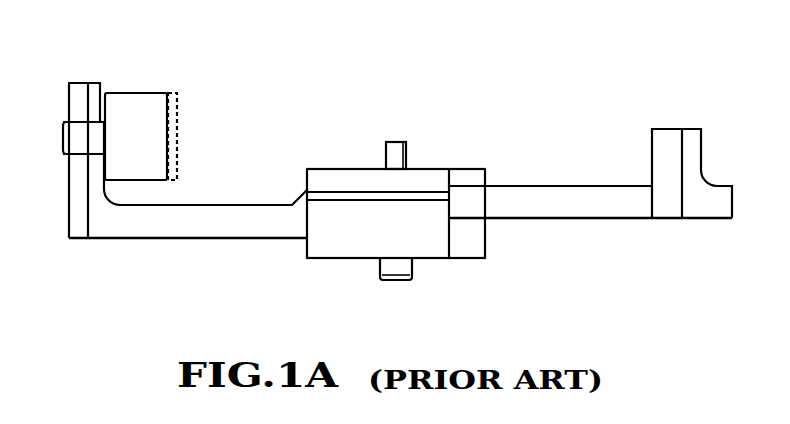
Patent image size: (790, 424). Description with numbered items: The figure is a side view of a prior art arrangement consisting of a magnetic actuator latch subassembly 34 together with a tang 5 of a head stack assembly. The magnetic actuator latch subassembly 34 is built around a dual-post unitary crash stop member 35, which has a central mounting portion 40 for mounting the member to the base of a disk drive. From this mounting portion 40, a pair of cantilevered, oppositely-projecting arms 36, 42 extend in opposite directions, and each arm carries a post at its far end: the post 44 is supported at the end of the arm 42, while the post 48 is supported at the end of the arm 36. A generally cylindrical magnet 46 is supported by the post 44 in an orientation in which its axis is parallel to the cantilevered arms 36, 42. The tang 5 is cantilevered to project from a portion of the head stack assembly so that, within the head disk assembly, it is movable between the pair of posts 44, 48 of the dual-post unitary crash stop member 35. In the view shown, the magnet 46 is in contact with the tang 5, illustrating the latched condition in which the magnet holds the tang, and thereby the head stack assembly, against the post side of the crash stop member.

The magnetic actuator latch subassembly 34 is at (533, 57).
The dual-post unitary crash stop member 35 is at (500, 208).
The arm 36 is at (562, 185).
The mounting portion 40 is at (427, 160).
The arm 42 is at (125, 232).
The post 44 is at (70, 192).
The magnet 46 is at (122, 97).
The post 48 is at (688, 158).
The tang 5 is at (180, 143).